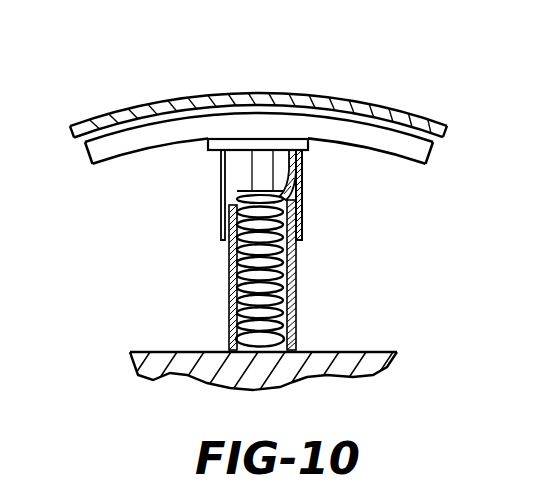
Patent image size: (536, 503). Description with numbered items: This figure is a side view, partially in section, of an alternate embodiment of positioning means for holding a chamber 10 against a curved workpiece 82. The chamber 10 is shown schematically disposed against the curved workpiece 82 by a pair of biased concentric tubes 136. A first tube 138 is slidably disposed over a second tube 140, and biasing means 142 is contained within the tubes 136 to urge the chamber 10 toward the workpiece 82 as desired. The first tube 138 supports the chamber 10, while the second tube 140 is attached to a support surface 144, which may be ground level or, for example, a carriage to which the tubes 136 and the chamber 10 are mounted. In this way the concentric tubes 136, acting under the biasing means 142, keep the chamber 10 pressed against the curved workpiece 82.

The curved workpiece 82 is at (223, 102).
The chamber 10 is at (112, 172).
The first tube 138 is at (232, 186).
The biasing means 142 is at (303, 200).
The second tube 140 is at (229, 326).
The support surface 144 is at (338, 350).
The biased concentric tubes 136 is at (334, 257).